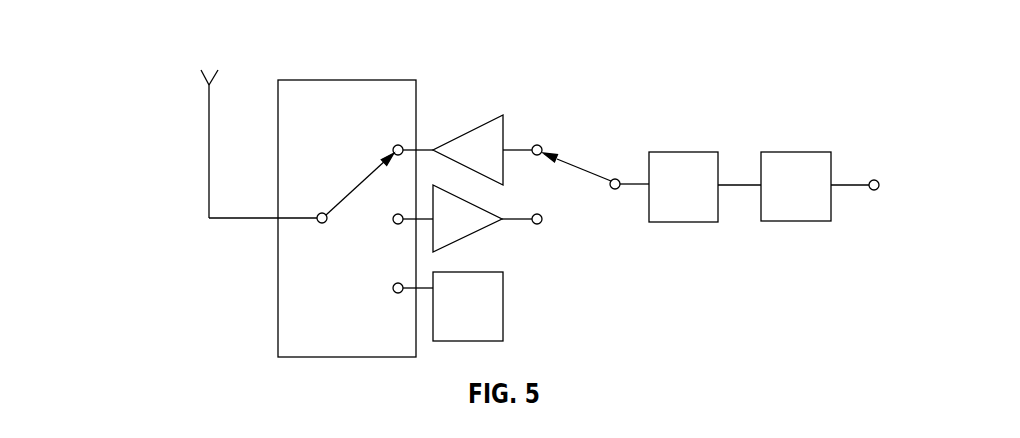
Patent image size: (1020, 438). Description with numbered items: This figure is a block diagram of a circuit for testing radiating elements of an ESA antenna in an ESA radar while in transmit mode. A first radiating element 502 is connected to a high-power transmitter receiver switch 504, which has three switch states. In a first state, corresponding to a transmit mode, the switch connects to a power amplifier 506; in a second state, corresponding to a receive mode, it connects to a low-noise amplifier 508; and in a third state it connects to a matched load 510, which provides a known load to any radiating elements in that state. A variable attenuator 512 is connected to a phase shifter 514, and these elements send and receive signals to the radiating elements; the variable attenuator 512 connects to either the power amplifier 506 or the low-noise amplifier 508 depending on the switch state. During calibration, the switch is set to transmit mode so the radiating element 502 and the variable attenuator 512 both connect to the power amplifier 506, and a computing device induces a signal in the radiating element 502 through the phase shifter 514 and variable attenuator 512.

The first radiating element 502 is at (209, 85).
The high-power transmitter receiver switch 504 is at (307, 88).
The power amplifier 506 is at (497, 118).
The low-noise amplifier 508 is at (485, 230).
The matched load 510 is at (503, 317).
The variable attenuator 512 is at (680, 158).
The phase shifter 514 is at (802, 158).